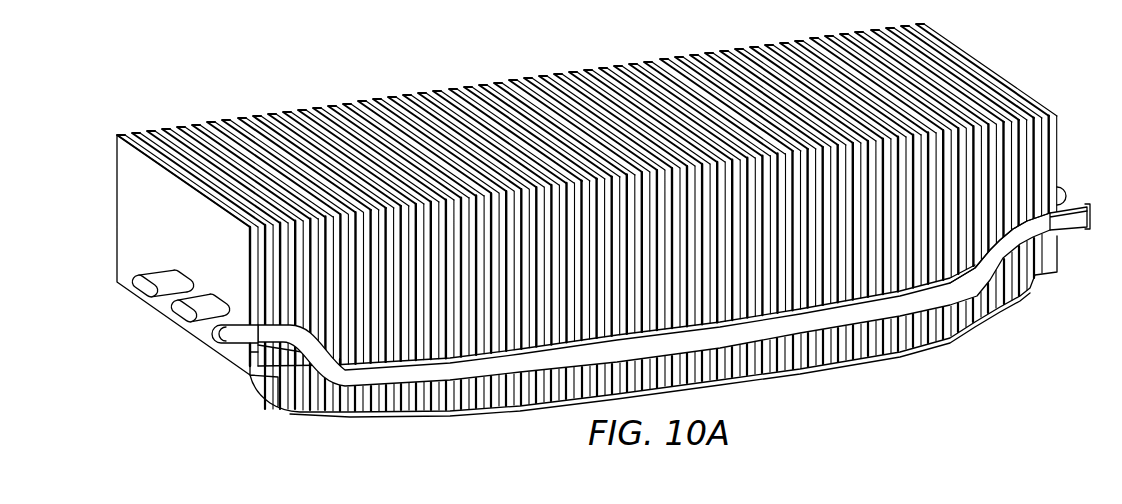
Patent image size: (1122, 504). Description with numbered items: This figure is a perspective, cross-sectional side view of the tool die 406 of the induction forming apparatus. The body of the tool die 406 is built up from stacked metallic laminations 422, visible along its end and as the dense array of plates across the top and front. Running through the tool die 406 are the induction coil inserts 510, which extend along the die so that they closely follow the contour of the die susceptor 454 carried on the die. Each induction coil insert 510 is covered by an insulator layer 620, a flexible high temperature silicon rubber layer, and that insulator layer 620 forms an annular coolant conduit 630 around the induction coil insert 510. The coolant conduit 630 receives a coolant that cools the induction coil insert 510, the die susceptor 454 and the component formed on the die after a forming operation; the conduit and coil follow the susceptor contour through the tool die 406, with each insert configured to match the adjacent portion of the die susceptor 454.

The tool die 406 is at (420, 74).
The metallic laminations 422 is at (127, 152).
The induction coil insert 510 is at (156, 274).
The coolant conduit 630 is at (238, 345).
The insulator layer 620 is at (990, 273).
The die susceptor 454 is at (886, 357).